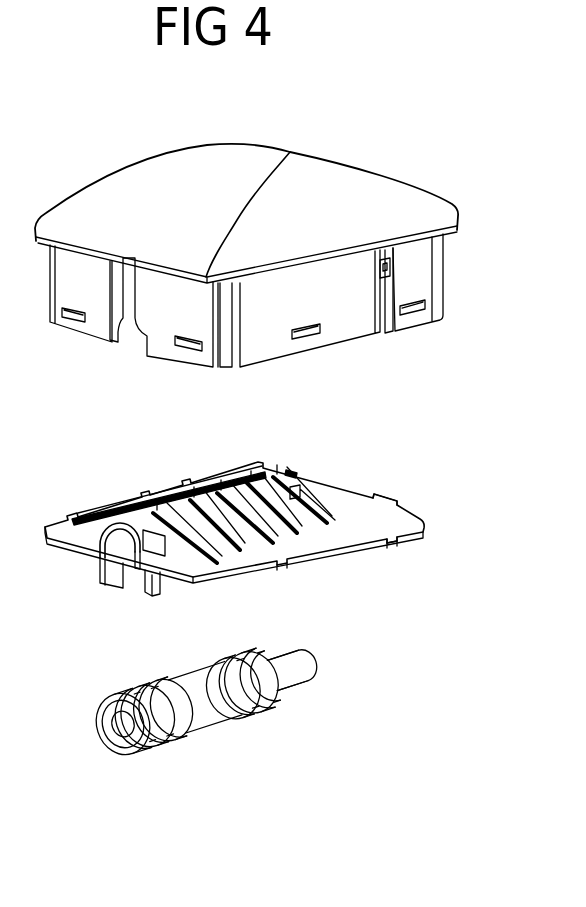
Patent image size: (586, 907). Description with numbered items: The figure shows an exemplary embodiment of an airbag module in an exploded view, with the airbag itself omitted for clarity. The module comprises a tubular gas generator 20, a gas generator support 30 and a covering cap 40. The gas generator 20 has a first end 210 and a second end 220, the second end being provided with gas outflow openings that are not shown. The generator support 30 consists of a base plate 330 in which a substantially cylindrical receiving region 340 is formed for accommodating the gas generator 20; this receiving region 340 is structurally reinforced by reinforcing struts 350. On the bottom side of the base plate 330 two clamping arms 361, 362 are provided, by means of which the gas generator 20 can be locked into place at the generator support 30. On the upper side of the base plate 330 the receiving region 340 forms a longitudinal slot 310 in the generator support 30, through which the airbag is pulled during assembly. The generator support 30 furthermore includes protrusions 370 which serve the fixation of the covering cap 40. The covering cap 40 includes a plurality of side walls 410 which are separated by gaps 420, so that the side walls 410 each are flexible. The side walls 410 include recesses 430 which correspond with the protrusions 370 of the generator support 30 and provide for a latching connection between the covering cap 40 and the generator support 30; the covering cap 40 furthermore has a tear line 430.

The covering cap 40 is at (365, 162).
The recesses / tear line 430 is at (268, 177).
The side walls 410 is at (158, 345).
The gaps 420 is at (227, 357).
The gas generator support 30 is at (347, 538).
The longitudinal slot 310 is at (237, 475).
The base plate 330 is at (393, 518).
The receiving region 340 is at (98, 555).
The reinforcing struts 350 is at (243, 532).
The clamping arm 361 is at (115, 582).
The clamping arm 362 is at (153, 591).
The protrusions 370 is at (410, 543).
The tubular gas generator 20 is at (217, 728).
The first end 210 is at (155, 733).
The second end 220 is at (305, 683).